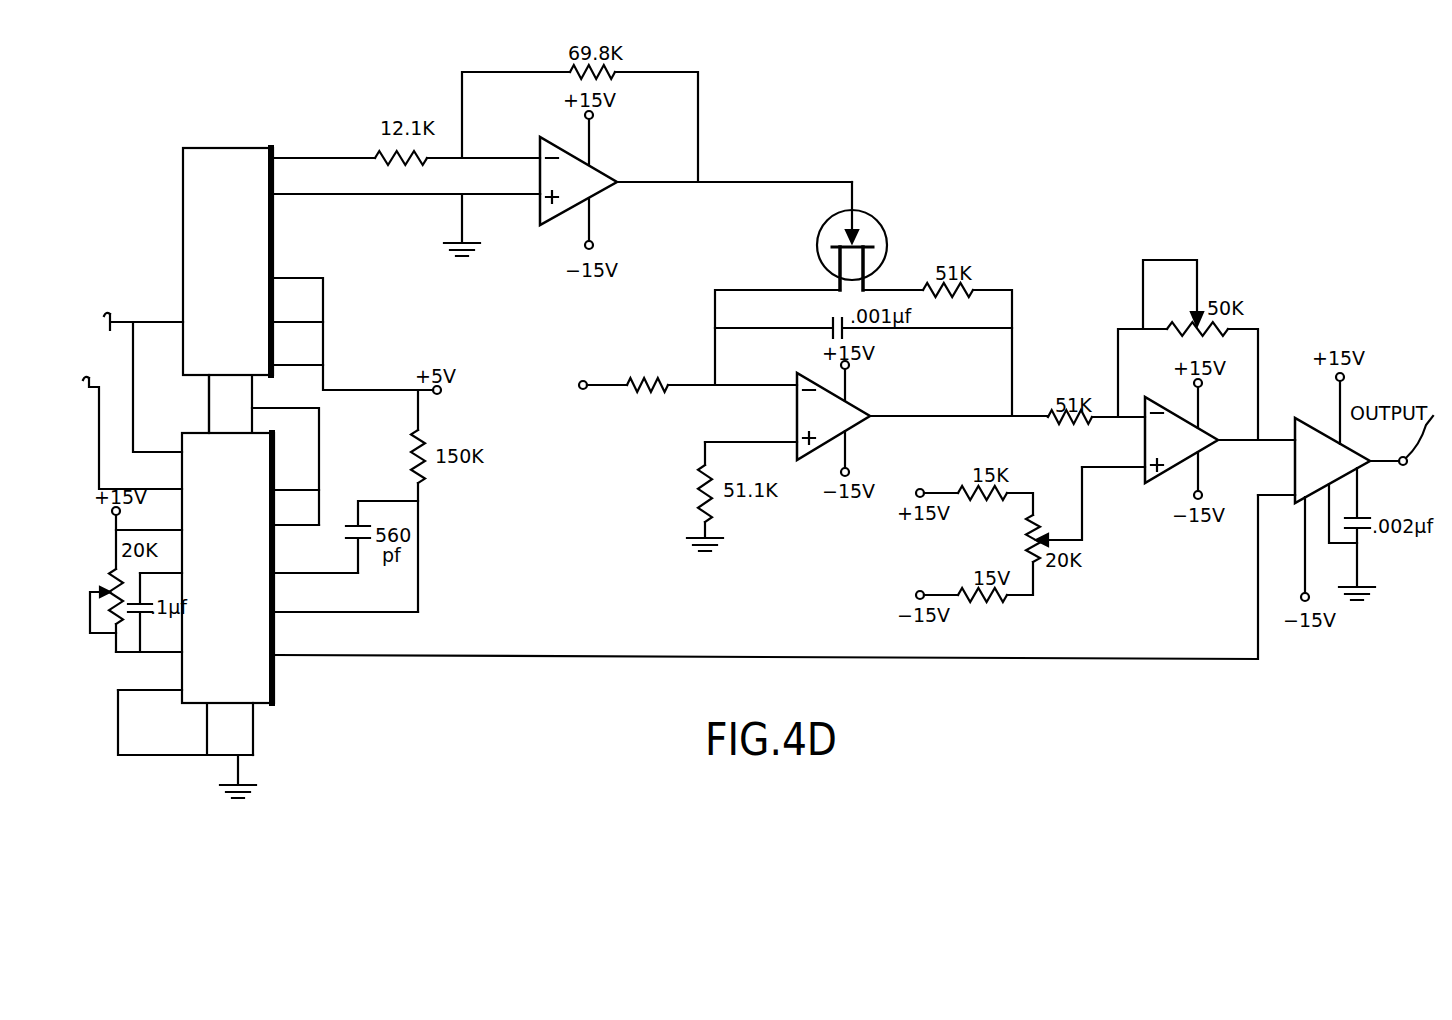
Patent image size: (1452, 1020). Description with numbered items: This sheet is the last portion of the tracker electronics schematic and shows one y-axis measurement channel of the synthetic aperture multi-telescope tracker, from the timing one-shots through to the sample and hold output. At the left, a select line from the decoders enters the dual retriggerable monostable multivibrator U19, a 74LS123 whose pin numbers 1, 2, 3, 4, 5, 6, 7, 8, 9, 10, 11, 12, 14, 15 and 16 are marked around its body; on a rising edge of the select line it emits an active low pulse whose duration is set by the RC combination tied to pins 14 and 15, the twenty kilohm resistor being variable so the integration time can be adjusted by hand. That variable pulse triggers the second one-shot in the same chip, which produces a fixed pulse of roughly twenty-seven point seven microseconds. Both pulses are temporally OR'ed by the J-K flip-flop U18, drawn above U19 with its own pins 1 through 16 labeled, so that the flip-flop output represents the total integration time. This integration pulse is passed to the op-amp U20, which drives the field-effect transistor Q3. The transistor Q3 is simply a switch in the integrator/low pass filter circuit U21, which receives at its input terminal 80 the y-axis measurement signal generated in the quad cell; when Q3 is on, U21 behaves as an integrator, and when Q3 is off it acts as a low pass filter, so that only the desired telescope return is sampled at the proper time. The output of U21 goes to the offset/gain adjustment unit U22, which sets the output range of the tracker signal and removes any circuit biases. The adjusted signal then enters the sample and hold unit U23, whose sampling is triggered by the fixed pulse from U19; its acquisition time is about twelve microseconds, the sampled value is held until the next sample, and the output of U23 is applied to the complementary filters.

The input terminal 80 is at (586, 389).
The J-K flip-flop unit U18 is at (228, 261).
The dual retriggerable monostable multivibrator U19 is at (228, 568).
The op-amp unit U20 is at (578, 181).
The integrator/low pass filter circuit unit U21 is at (833, 416).
The offset/gain adjustment unit U22 is at (1181, 440).
The sample and hold unit U23 is at (1332, 460).
The field-effect transistor Q3 is at (868, 238).
The pin 1 is at (781, 455).
The pin 2 is at (614, 311).
The pin 3 is at (714, 323).
The pin 4 is at (764, 392).
The pin 5 is at (751, 479).
The pin 6 is at (823, 485).
The pin 7 is at (815, 374).
The pin 8 is at (706, 405).
The pin 9 is at (261, 729).
The pin 10 is at (285, 466).
The pin 11 is at (296, 477).
The pin 12 is at (220, 405).
The pin 14 is at (161, 562).
The pin 15 is at (149, 640).
The pin 16 is at (219, 437).